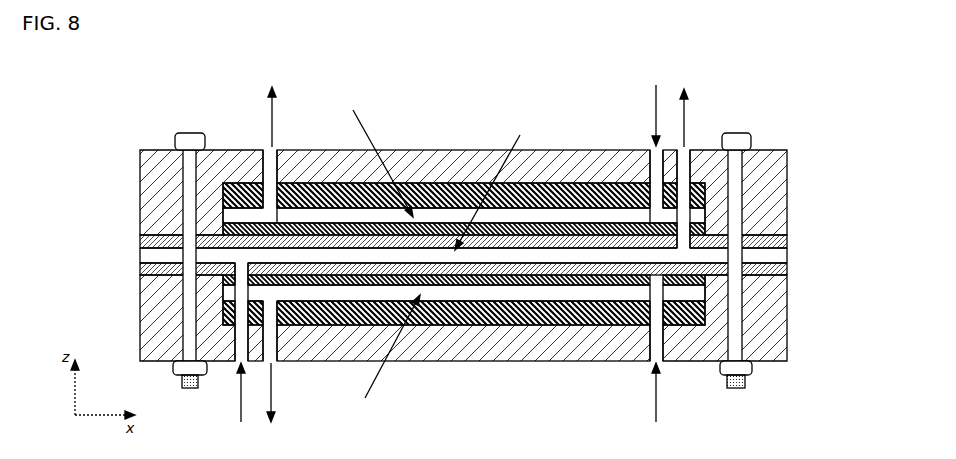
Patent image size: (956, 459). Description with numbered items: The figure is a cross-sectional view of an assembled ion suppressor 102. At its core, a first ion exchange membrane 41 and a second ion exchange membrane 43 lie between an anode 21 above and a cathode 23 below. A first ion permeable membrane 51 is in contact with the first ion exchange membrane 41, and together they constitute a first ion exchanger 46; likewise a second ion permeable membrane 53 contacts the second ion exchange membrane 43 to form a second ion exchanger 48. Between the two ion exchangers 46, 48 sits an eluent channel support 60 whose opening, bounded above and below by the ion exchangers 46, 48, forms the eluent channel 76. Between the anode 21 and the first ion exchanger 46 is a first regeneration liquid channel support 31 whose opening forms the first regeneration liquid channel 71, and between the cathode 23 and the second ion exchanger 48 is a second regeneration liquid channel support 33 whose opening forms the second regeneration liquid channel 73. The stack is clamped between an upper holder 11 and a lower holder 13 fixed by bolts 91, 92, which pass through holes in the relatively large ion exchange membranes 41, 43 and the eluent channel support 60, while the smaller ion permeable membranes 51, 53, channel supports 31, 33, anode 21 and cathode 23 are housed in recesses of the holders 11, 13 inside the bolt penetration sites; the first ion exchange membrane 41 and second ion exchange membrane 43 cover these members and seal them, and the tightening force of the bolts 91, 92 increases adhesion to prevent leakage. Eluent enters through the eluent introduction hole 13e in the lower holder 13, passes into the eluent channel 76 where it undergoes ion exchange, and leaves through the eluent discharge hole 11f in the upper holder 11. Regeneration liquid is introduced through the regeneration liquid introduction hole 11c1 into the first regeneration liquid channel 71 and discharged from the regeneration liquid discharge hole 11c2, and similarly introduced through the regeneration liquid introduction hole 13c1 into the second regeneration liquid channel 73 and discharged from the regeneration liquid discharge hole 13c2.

The ion suppressor 102 is at (120, 160).
The holder 11 is at (778, 162).
The holder 13 is at (783, 350).
The anode 21 is at (706, 200).
The cathode 23 is at (706, 310).
The first regeneration liquid channel support 31 is at (706, 216).
The second regeneration liquid channel support 33 is at (706, 292).
The first ion exchange membrane 41 is at (788, 242).
The second ion exchange membrane 43 is at (788, 270).
The first ion exchanger 46 is at (532, 228).
The second ion exchanger 48 is at (533, 284).
The first ion permeable membrane 51 is at (706, 230).
The second ion permeable membrane 53 is at (706, 280).
The eluent channel support 60 is at (778, 256).
The first regeneration liquid channel 71 is at (358, 110).
The second regeneration liquid channel 73 is at (368, 420).
The eluent channel 76 is at (521, 130).
The bolt 91 is at (190, 142).
The bolt 92 is at (735, 140).
The regeneration liquid discharge hole 11c2 is at (335, 147).
The regeneration liquid introduction hole 11c1 is at (648, 147).
The eluent discharge hole 11f is at (720, 132).
The eluent introduction hole 13e is at (228, 426).
The regeneration liquid discharge hole 13c2 is at (335, 386).
The regeneration liquid introduction hole 13c1 is at (648, 386).